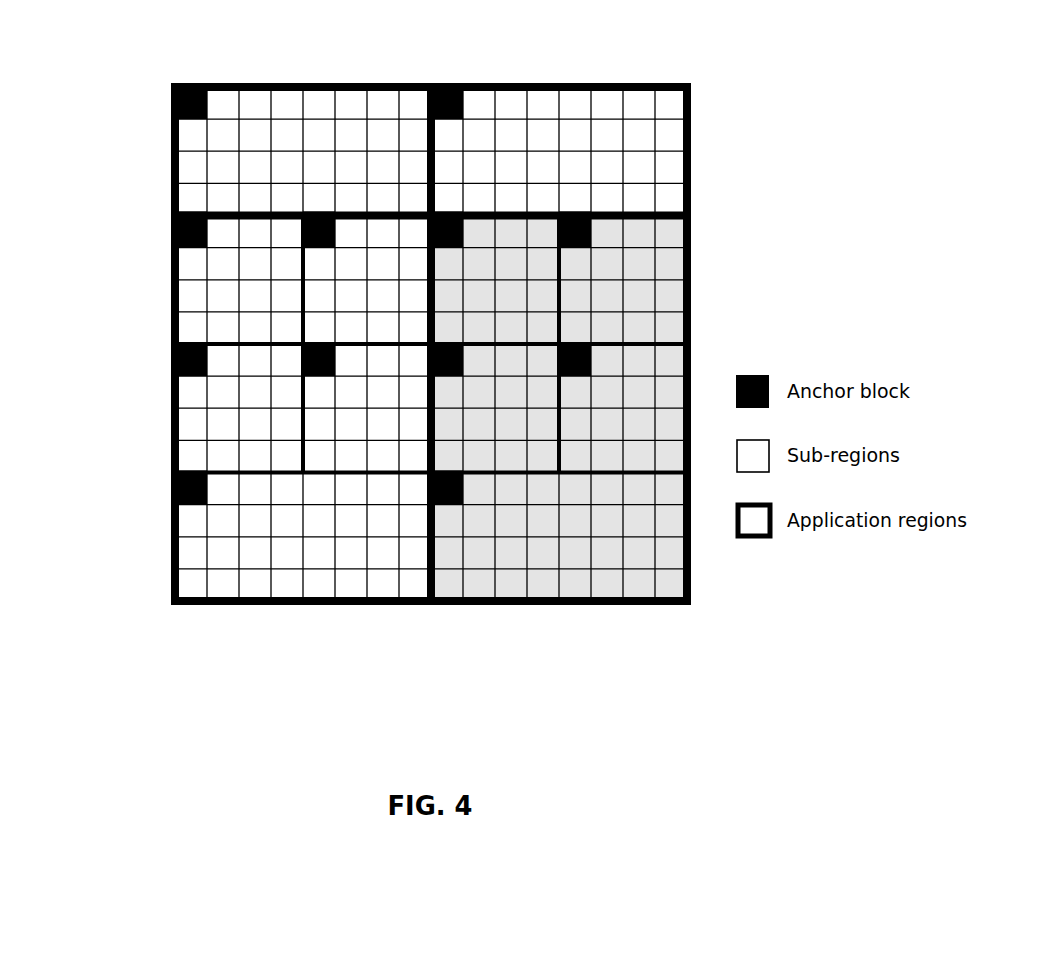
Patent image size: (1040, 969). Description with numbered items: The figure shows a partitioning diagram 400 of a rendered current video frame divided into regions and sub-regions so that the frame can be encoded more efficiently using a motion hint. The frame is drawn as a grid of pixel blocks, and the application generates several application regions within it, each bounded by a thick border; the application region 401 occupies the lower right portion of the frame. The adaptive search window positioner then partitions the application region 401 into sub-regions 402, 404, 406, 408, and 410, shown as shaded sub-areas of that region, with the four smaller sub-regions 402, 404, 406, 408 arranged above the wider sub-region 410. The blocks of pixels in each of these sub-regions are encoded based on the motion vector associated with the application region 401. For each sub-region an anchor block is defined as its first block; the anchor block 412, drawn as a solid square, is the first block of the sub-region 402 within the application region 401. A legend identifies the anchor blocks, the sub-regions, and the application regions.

The layout diagram 400 is at (600, 322).
The application region 401 is at (690, 218).
The sub-region 402 is at (495, 280).
The sub-region 404 is at (623, 280).
The sub-region 406 is at (495, 408).
The sub-region 408 is at (623, 408).
The sub-region 410 is at (559, 537).
The anchor block 412 is at (614, 260).